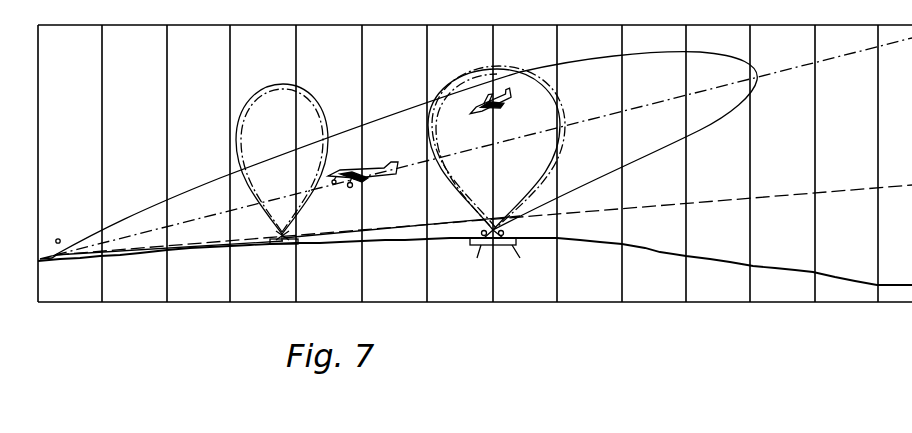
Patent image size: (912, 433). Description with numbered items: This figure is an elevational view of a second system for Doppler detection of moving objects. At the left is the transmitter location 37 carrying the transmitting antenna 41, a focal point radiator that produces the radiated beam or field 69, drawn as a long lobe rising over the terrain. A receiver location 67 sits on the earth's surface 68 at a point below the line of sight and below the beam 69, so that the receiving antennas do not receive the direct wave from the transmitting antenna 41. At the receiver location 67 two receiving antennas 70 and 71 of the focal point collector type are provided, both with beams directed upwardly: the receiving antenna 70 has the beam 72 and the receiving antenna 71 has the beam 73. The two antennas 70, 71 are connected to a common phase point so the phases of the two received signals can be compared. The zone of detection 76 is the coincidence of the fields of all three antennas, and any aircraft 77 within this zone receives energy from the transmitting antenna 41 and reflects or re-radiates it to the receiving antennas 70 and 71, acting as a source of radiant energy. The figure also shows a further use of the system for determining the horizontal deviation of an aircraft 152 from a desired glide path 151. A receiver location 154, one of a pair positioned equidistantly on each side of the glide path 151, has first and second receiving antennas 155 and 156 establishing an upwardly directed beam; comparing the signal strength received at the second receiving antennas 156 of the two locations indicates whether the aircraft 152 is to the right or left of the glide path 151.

The transmitter location 37 is at (40, 259).
The transmitting antenna 41 is at (55, 255).
The receiver location 67 is at (511, 247).
The earth's surface 68 is at (320, 244).
The radiated beam or field 69 is at (402, 103).
The receiving antenna 70 is at (484, 248).
The receiving antenna 71 is at (508, 236).
The beam 72 is at (458, 74).
The beam 73 is at (557, 92).
The zone of detection 76 is at (565, 160).
The aircraft 77 is at (483, 115).
The glide path 151 is at (212, 198).
The aircraft 152 is at (372, 170).
The receiver location 154 is at (279, 247).
The first receiving antenna 155 is at (272, 236).
The second receiving antenna 156 is at (298, 237).